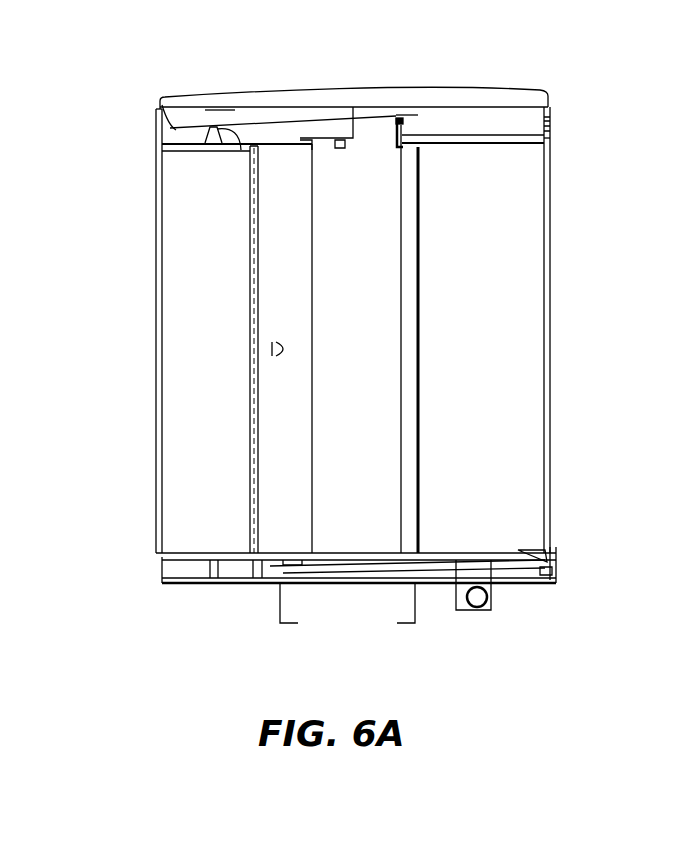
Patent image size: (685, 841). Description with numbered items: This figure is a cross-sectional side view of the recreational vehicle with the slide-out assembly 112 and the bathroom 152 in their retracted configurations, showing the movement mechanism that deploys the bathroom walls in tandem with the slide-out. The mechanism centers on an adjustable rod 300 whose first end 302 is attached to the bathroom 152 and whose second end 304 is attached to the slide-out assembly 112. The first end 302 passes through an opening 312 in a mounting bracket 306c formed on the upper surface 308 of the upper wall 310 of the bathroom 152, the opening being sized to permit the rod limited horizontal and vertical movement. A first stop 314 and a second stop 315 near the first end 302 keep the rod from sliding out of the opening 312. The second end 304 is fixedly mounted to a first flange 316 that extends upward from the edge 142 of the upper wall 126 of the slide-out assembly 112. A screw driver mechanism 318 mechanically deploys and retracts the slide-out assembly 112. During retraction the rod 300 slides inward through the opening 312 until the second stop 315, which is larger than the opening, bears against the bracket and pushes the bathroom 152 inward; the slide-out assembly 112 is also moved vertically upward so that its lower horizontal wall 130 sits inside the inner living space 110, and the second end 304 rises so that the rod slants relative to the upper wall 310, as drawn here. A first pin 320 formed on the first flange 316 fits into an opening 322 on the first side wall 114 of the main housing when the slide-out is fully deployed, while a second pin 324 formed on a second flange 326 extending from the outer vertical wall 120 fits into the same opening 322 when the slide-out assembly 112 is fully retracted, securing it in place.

The adjustable rod 300 is at (255, 115).
The first end 302 is at (193, 128).
The second end 304 is at (367, 115).
The rail 306c is at (240, 152).
The upper surface 308 is at (170, 138).
The upper wall 310 is at (155, 144).
The opening 312 is at (213, 147).
The first stop 314 is at (160, 108).
The second stop 315 is at (221, 127).
The first flange 316 is at (395, 120).
The screw driver mechanism 318 is at (478, 612).
The first pin 320 is at (403, 120).
The opening 322 is at (555, 125).
The second pin 324 is at (543, 130).
The second flange 326 is at (555, 138).
The inner living space 110 is at (357, 480).
The slide-out assembly 112 is at (527, 173).
The first side wall 114 is at (553, 110).
The outer vertical wall 120 is at (547, 393).
The upper wall 126 is at (467, 137).
The lower horizontal wall 130 is at (492, 553).
The edge 142 is at (405, 138).
The bathroom 152 is at (180, 320).